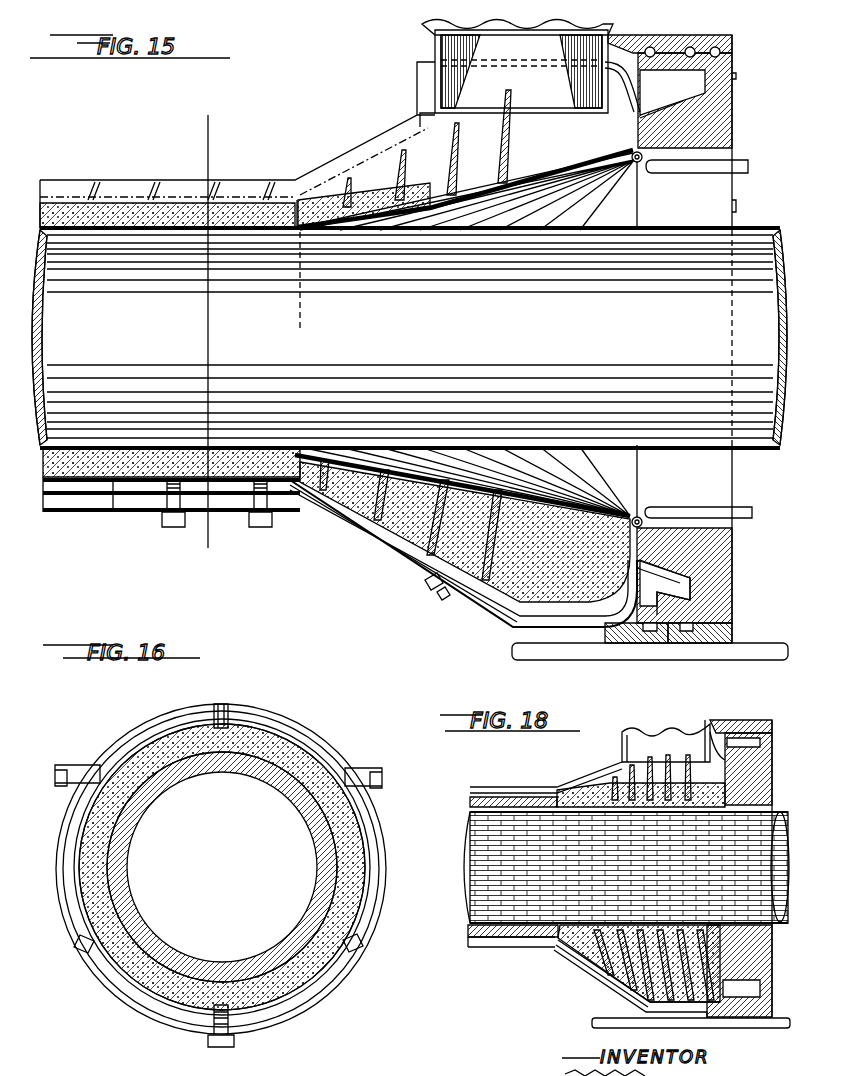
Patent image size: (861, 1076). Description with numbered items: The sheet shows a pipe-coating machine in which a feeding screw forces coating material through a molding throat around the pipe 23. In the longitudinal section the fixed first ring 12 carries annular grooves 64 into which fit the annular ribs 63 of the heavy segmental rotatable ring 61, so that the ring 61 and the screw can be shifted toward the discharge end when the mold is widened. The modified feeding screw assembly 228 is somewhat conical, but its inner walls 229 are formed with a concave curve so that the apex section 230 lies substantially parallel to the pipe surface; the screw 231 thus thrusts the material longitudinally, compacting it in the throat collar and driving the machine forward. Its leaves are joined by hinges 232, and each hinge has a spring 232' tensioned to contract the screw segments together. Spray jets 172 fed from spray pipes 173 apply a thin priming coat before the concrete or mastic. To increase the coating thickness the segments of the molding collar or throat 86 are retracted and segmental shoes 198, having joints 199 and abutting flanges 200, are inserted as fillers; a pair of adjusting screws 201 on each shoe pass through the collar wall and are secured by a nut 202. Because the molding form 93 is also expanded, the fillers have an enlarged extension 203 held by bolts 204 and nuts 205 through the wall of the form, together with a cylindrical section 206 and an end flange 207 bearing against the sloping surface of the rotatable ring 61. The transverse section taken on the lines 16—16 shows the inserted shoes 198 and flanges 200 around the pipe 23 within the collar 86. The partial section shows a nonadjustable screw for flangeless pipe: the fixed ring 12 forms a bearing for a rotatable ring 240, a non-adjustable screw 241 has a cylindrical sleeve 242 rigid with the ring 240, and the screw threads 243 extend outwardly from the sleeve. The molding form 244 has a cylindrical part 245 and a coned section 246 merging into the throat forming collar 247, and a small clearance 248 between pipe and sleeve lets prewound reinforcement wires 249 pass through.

In FIG. 15, the first ring 12 is at (736, 44).
In FIG. 18, the first ring 12 is at (752, 720).
In FIG. 15, the section line 16 is at (258, 128).
In FIG. 15, the pipe 23 is at (706, 342).
In FIG. 16, the pipe 23 is at (140, 935).
In FIG. 15, the rotatable ring 61 is at (678, 538).
In FIG. 15, the annular ribs 63 is at (672, 628).
In FIG. 15, the annular grooves 64 is at (695, 628).
In FIG. 15, the molding collar 86 is at (192, 514).
In FIG. 16, the molding collar 86 is at (320, 718).
In FIG. 15, the molding form 93 is at (345, 553).
In FIG. 15, the spray jets 172 is at (540, 206).
In FIG. 15, the spray pipes 173 is at (686, 176).
In FIG. 16, the segmental shoes 198 is at (373, 835).
In FIG. 16, the joints 199 is at (352, 952).
In FIG. 15, the abutting flanges 200 is at (388, 139).
In FIG. 16, the abutting flanges 200 is at (362, 938).
In FIG. 15, the adjusting screws 201 is at (165, 514).
In FIG. 16, the adjusting screws 201 is at (383, 781).
In FIG. 15, the nut 202 is at (172, 527).
In FIG. 16, the nut 202 is at (363, 776).
In FIG. 15, the enlarged extension 203 is at (420, 550).
In FIG. 15, the bolts 204 is at (428, 592).
In FIG. 15, the nuts 205 is at (447, 598).
In FIG. 15, the cylindrical section 206 is at (560, 612).
In FIG. 15, the end flange 207 is at (660, 588).
In FIG. 15, the feeding screw assembly 228 is at (565, 504).
In FIG. 15, the inner walls 229 is at (485, 195).
In FIG. 15, the apex section 230 is at (343, 232).
In FIG. 15, the screw 231 is at (522, 164).
In FIG. 15, the hinges 232 is at (552, 125).
In FIG. 15, the spring 232' is at (692, 486).
In FIG. 18, the rotatable ring 240 is at (773, 745).
In FIG. 18, the non-adjustable screw 241 is at (625, 790).
In FIG. 18, the cylindrical sleeve 242 is at (688, 790).
In FIG. 18, the screw threads 243 is at (652, 764).
In FIG. 18, the molding form 244 is at (619, 995).
In FIG. 18, the cylindrical part 245 is at (662, 1008).
In FIG. 18, the coned section 246 is at (597, 968).
In FIG. 18, the throat forming collar 247 is at (515, 947).
In FIG. 18, the clearance 248 is at (707, 935).
In FIG. 18, the reinforcement wires 249 is at (482, 855).